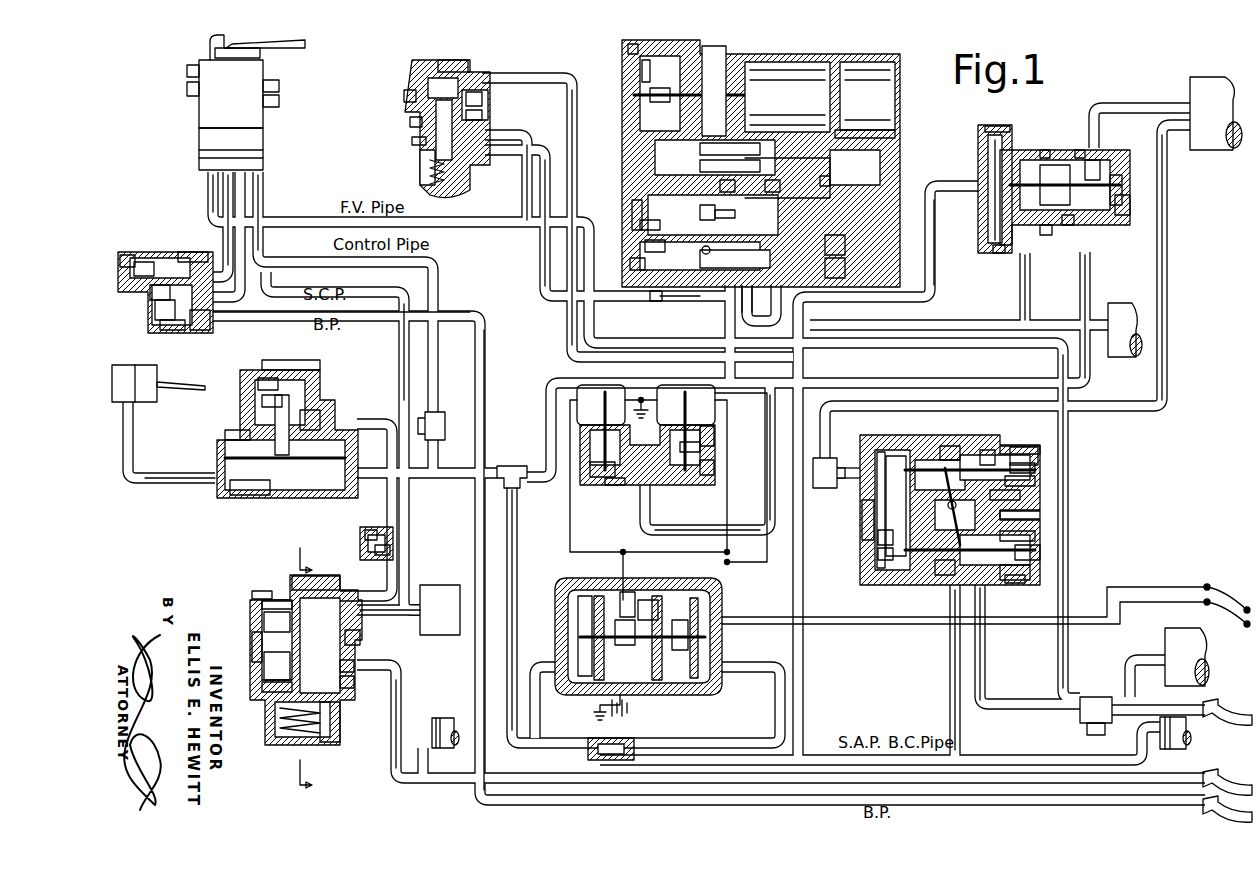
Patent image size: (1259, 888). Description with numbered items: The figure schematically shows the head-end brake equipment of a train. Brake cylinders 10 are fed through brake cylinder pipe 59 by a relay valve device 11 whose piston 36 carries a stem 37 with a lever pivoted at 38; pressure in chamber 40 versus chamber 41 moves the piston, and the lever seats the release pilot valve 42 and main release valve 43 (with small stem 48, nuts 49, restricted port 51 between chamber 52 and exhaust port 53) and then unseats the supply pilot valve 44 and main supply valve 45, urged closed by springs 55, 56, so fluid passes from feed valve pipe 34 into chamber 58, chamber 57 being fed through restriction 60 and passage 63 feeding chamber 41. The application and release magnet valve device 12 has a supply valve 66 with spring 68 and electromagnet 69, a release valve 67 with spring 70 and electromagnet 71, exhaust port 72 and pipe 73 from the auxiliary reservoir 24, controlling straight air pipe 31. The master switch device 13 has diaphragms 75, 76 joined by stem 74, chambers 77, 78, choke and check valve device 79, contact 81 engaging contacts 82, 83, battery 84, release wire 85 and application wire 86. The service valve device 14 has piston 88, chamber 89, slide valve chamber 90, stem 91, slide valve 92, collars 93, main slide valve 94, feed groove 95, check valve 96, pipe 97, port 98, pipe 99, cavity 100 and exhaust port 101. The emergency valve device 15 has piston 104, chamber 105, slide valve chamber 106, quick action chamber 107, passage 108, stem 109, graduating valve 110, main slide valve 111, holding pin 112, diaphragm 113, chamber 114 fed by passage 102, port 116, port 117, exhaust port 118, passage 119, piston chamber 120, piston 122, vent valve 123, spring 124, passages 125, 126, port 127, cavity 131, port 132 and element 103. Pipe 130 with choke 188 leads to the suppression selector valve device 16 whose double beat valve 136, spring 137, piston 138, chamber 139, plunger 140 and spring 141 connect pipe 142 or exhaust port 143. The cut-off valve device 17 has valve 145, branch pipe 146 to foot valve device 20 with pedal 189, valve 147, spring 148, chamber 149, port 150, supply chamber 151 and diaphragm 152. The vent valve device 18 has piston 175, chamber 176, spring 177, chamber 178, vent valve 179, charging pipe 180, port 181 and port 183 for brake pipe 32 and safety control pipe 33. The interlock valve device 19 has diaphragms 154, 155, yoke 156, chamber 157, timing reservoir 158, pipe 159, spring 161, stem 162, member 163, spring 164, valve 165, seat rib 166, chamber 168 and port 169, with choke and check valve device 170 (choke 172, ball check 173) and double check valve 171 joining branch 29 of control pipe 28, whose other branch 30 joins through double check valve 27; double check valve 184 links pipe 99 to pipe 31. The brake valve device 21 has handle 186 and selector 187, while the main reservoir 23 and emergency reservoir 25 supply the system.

The brake cylinder 10 is at (450, 736).
The relay valve device 11 is at (884, 587).
The application and release magnet valve device 12 is at (616, 500).
The master switch device 13 is at (557, 584).
The service valve device 14 is at (1122, 240).
The emergency valve device 15 is at (897, 63).
The suppression selector valve device 16 is at (402, 102).
The cut-off valve device 17 is at (351, 398).
The brake pipe vent valve device 18 is at (200, 346).
The interlock or application insuring valve device 19 is at (248, 653).
The foot valve device 20 is at (150, 405).
The brake valve device 21 is at (272, 144).
The main reservoir 23 is at (1172, 628).
The auxiliary reservoir 24 is at (1206, 152).
The emergency reservoir 25 is at (1120, 305).
The double check valve device 27 is at (515, 467).
The main control pipe 28 is at (513, 600).
The branch of the control pipe 29 is at (208, 186).
The branch of the control pipe 30 is at (577, 172).
The straight air pipe 31 is at (705, 530).
The brake pipe 32 is at (246, 189).
The safety control pipe 33 is at (401, 320).
The feed valve pipe 34 is at (262, 222).
The piston 36 is at (878, 538).
The stem 37 is at (870, 519).
The pivot 38 is at (945, 506).
The chamber 40 is at (878, 481).
The chamber 41 is at (878, 459).
The release pilot valve 42 is at (950, 445).
The main release valve 43 is at (990, 450).
The supply pilot valve 44 is at (1025, 541).
The main supply valve 45 is at (990, 592).
The small stem 48 is at (1010, 499).
The nuts 49 is at (1020, 467).
The restricted port 51 is at (1015, 448).
The chamber 52 is at (1015, 481).
The exhaust port 53 is at (1000, 442).
The spring 55 is at (1020, 586).
The spring 56 is at (1035, 556).
The chamber 57 is at (1012, 591).
The chamber 58 is at (945, 589).
The brake cylinder pipe 59 is at (396, 770).
The restriction 60 is at (1030, 516).
The passage 63 is at (878, 555).
The supply valve 66 is at (590, 471).
The release valve 67 is at (706, 446).
The spring 68 is at (610, 491).
The electromagnet 69 is at (590, 393).
The spring 70 is at (716, 466).
The electromagnet 71 is at (720, 392).
The exhaust port 72 is at (716, 426).
The pipe 73 is at (1168, 372).
The stem 74 is at (648, 641).
The diaphragm 75 is at (587, 638).
The diaphragm 76 is at (689, 641).
The chamber 77 is at (706, 611).
The chamber 78 is at (580, 616).
The choke and check valve device 79 is at (628, 738).
The electrical contact 81 is at (630, 641).
The stationary contact 82 is at (653, 610).
The stationary contact 83 is at (625, 595).
The battery 84 is at (605, 699).
The release wire 85 is at (752, 623).
The application wire 86 is at (765, 562).
The piston 88 is at (990, 151).
The chamber 89 is at (990, 196).
The slide valve chamber 90 is at (1048, 148).
The stem 91 is at (1080, 148).
The slide valve 92 is at (1093, 165).
The shoulders or collars 93 is at (1120, 184).
The main slide valve 94 is at (1055, 248).
The feed groove 95 is at (985, 128).
The spring loaded check valve 96 is at (998, 256).
The pipe 97 is at (1006, 283).
The port 98 is at (1122, 203).
The pipe and passage 99 is at (1085, 252).
The cavity 100 is at (1060, 180).
The exhaust port 101 is at (1070, 230).
The passage 102 is at (760, 299).
The passage 103 is at (832, 180).
The piston 104 is at (845, 266).
The chamber 105 is at (845, 244).
The slide valve chamber 106 is at (750, 172).
The quick action chamber 107 is at (880, 92).
The passage 108 is at (835, 158).
The stem 109 is at (765, 188).
The graduating valve 110 is at (632, 209).
The main slide valve 111 is at (640, 229).
The holding pin 112 is at (700, 171).
The diaphragm 113 is at (730, 190).
The chamber 114 is at (700, 149).
The small port 116 is at (700, 210).
The port 117 is at (705, 256).
The exhaust port 118 is at (690, 292).
The passage 119 is at (630, 267).
The piston chamber 120 is at (636, 91).
The piston 122 is at (640, 69).
The vent valve 123 is at (716, 60).
The spring 124 is at (760, 99).
The passage 125 is at (878, 120).
The atmospheric passage 126 is at (626, 47).
The small port 127 is at (650, 100).
The pipe 130 is at (550, 150).
The cavity 131 is at (732, 214).
The port 132 is at (645, 247).
The double beat valve 136 is at (412, 142).
The spring 137 is at (422, 177).
The piston 138 is at (404, 95).
The chamber 139 is at (448, 68).
The plunger 140 is at (408, 122).
The spring 141 is at (486, 101).
The pipe 142 is at (540, 207).
The exhaust port 143 is at (486, 119).
The valve 145 is at (240, 489).
The branch pipe 146 is at (145, 478).
The supply controlling valve 147 is at (262, 409).
The spring 148 is at (258, 387).
The chamber 149 is at (240, 431).
The port 150 is at (290, 365).
The supply chamber 151 is at (312, 420).
The diaphragm 152 is at (235, 449).
The diaphragm 154 is at (265, 586).
The diaphragm 155 is at (270, 689).
The yoke shaped member 156 is at (272, 606).
The chamber 157 is at (315, 586).
The timing reservoir 158 is at (432, 588).
The pipe 159 is at (384, 603).
The spring 161 is at (280, 737).
The stem 162 is at (340, 716).
The member 163 is at (352, 684).
The spring 164 is at (352, 671).
The valve 165 is at (358, 640).
The annular seat rib 166 is at (290, 629).
The chamber 168 is at (272, 666).
The port 169 is at (262, 646).
The choke and check valve device 170 is at (356, 531).
The double check valve device 171 is at (425, 409).
The choke 172 is at (395, 547).
The ball check valve device 173 is at (395, 533).
The piston 175 is at (140, 300).
The chamber 176 is at (130, 258).
The spring 177 is at (140, 272).
The chamber 178 is at (150, 318).
The vent valve 179 is at (205, 325).
The charging pipe 180 is at (223, 208).
The small port 181 is at (180, 255).
The port 183 is at (160, 335).
The double check valve device 184 is at (824, 456).
The handle 186 is at (272, 50).
The selector 187 is at (192, 90).
The choke 188 is at (655, 304).
The foot pedal 189 is at (165, 389).